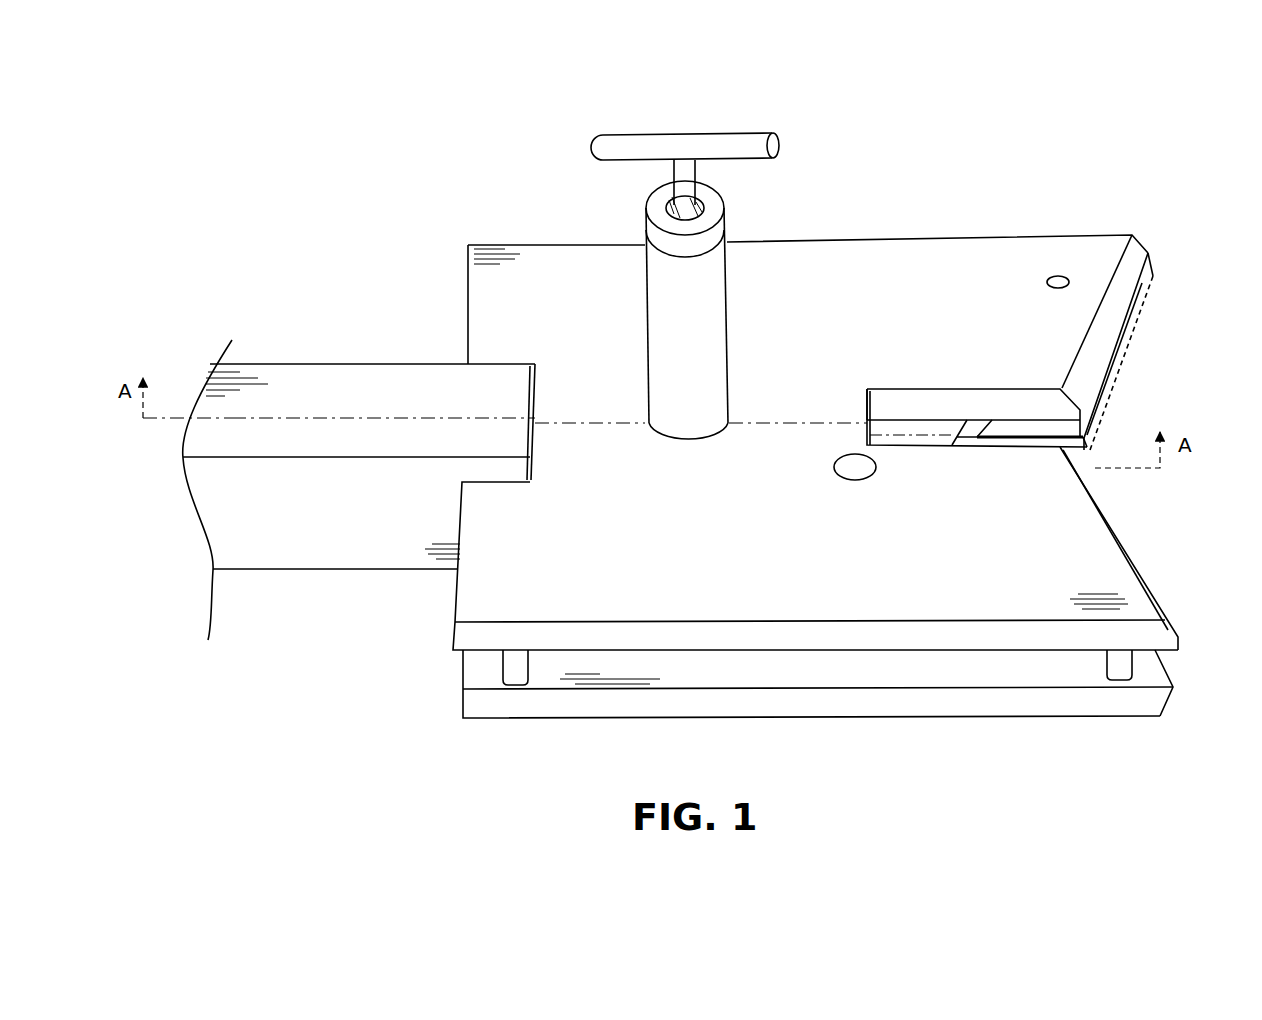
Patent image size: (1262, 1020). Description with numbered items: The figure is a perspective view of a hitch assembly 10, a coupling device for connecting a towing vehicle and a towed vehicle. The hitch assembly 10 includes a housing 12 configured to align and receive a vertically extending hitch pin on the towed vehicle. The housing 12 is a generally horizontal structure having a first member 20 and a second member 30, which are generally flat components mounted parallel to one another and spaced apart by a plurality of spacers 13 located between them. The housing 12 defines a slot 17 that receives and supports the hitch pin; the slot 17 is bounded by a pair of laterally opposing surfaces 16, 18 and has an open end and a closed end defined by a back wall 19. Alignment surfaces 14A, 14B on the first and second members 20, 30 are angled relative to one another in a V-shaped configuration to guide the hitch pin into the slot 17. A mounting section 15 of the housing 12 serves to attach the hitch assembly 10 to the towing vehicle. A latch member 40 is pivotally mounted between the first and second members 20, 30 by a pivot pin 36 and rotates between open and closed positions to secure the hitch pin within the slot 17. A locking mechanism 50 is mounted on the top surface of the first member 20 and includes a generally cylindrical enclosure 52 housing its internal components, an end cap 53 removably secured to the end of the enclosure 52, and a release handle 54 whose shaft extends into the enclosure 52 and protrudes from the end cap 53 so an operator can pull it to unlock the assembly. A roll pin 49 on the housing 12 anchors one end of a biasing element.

The hitch assembly 10 is at (927, 137).
The housing 12 is at (986, 237).
The spacers 13 is at (518, 673).
The alignment surface 14A is at (1137, 287).
The alignment surface 14B is at (1138, 317).
The mounting section 15 is at (343, 532).
The laterally opposing surface 16 is at (1000, 434).
The slot 17 is at (1046, 412).
The laterally opposing surface 18 is at (997, 402).
The back wall 19 is at (867, 412).
The first member 20 is at (1148, 632).
The second member 30 is at (1158, 700).
The pivot pin 36 is at (855, 468).
The latch member 40 is at (964, 430).
The roll pin 49 is at (1063, 282).
The locking mechanism 50 is at (679, 262).
The enclosure 52 is at (713, 347).
The end cap 53 is at (714, 209).
The release handle 54 is at (626, 142).